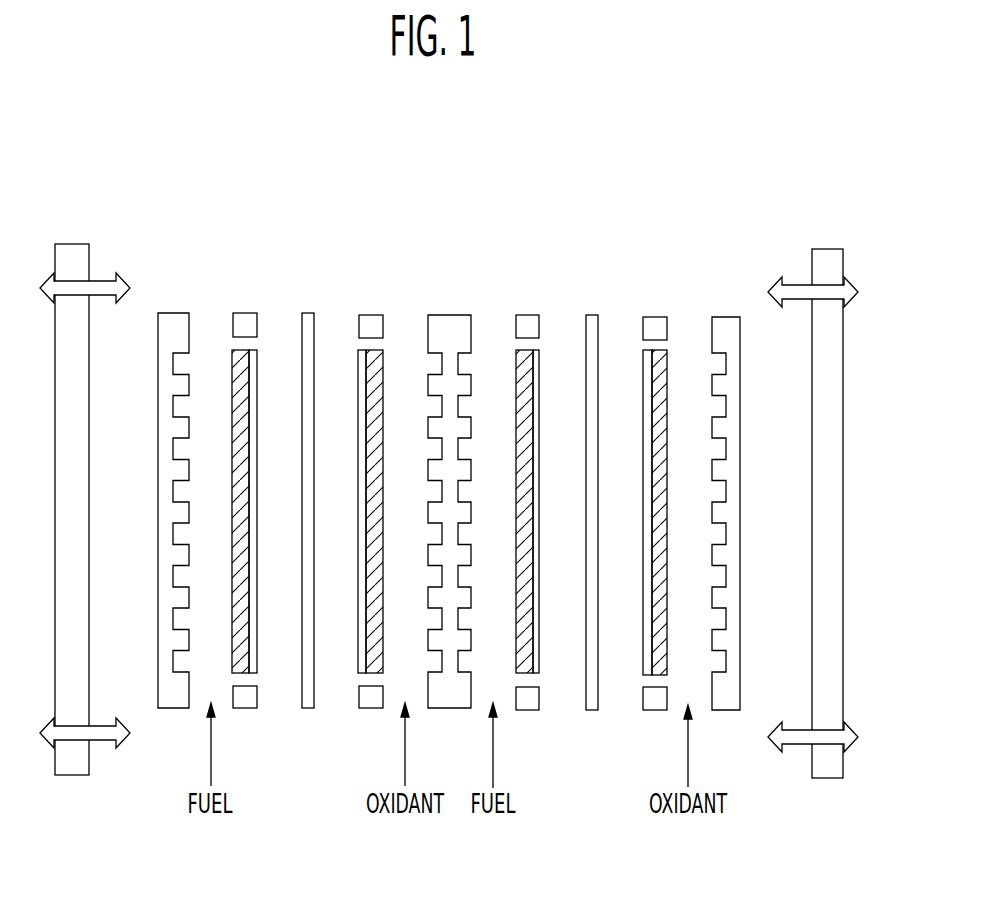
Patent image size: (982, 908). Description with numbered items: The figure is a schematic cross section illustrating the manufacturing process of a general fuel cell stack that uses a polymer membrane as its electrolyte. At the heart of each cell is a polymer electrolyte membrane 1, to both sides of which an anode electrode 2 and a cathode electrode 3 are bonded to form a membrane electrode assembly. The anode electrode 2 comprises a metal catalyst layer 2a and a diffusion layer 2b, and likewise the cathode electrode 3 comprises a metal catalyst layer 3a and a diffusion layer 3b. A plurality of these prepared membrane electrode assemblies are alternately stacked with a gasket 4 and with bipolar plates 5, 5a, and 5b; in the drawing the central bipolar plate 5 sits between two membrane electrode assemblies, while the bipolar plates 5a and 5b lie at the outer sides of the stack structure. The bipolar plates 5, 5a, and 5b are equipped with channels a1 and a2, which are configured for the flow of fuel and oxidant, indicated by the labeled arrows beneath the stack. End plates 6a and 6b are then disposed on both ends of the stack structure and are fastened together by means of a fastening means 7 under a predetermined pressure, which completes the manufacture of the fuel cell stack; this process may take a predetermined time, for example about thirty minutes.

The polymer electrolyte membrane 1 is at (308, 313).
The anode electrode 2 is at (388, 458).
The metal catalyst layer 2a is at (233, 372).
The diffusion layer 2b is at (257, 372).
The cathode electrode 3 is at (516, 493).
The metal catalyst layer 3a is at (358, 372).
The diffusion layer 3b is at (383, 372).
The gasket 4 is at (370, 709).
The bipolar plate 5 is at (450, 315).
The bipolar plate 5a is at (172, 313).
The bipolar plate 5b is at (727, 317).
The channel a1 is at (180, 363).
The channel a2 is at (722, 363).
The end plate 6a is at (73, 244).
The end plate 6b is at (813, 469).
The fastening means 7 is at (790, 285).